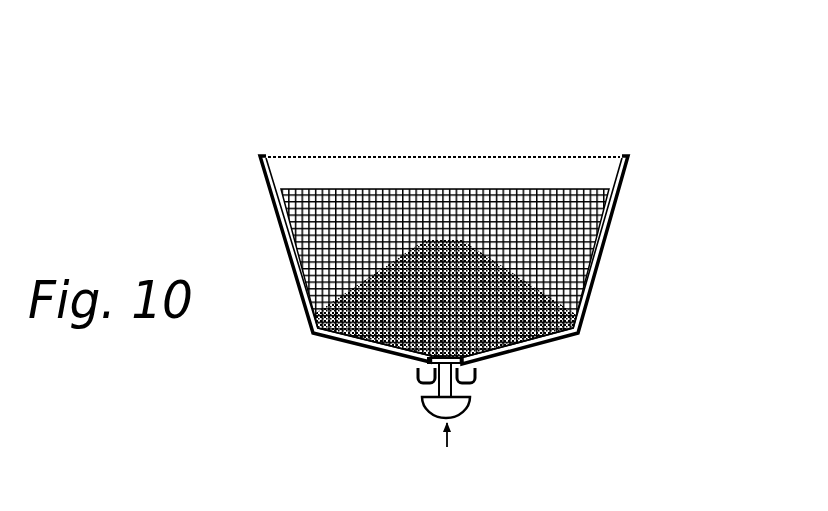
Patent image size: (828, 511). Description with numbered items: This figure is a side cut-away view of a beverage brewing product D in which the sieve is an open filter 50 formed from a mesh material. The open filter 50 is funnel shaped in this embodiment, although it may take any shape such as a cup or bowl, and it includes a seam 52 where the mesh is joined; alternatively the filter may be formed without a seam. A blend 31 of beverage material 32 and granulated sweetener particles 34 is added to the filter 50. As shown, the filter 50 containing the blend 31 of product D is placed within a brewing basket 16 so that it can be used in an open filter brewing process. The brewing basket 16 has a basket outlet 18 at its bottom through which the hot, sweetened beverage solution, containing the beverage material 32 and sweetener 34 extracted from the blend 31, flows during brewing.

The brewing basket 16 is at (284, 254).
The basket outlet 18 is at (465, 389).
The blend 31 is at (473, 267).
The beverage material 32 is at (410, 242).
The granulated sweetener particles 34 is at (417, 243).
The open filter 50 is at (605, 158).
The seam 52 is at (576, 324).
The beverage brewing product D is at (315, 178).